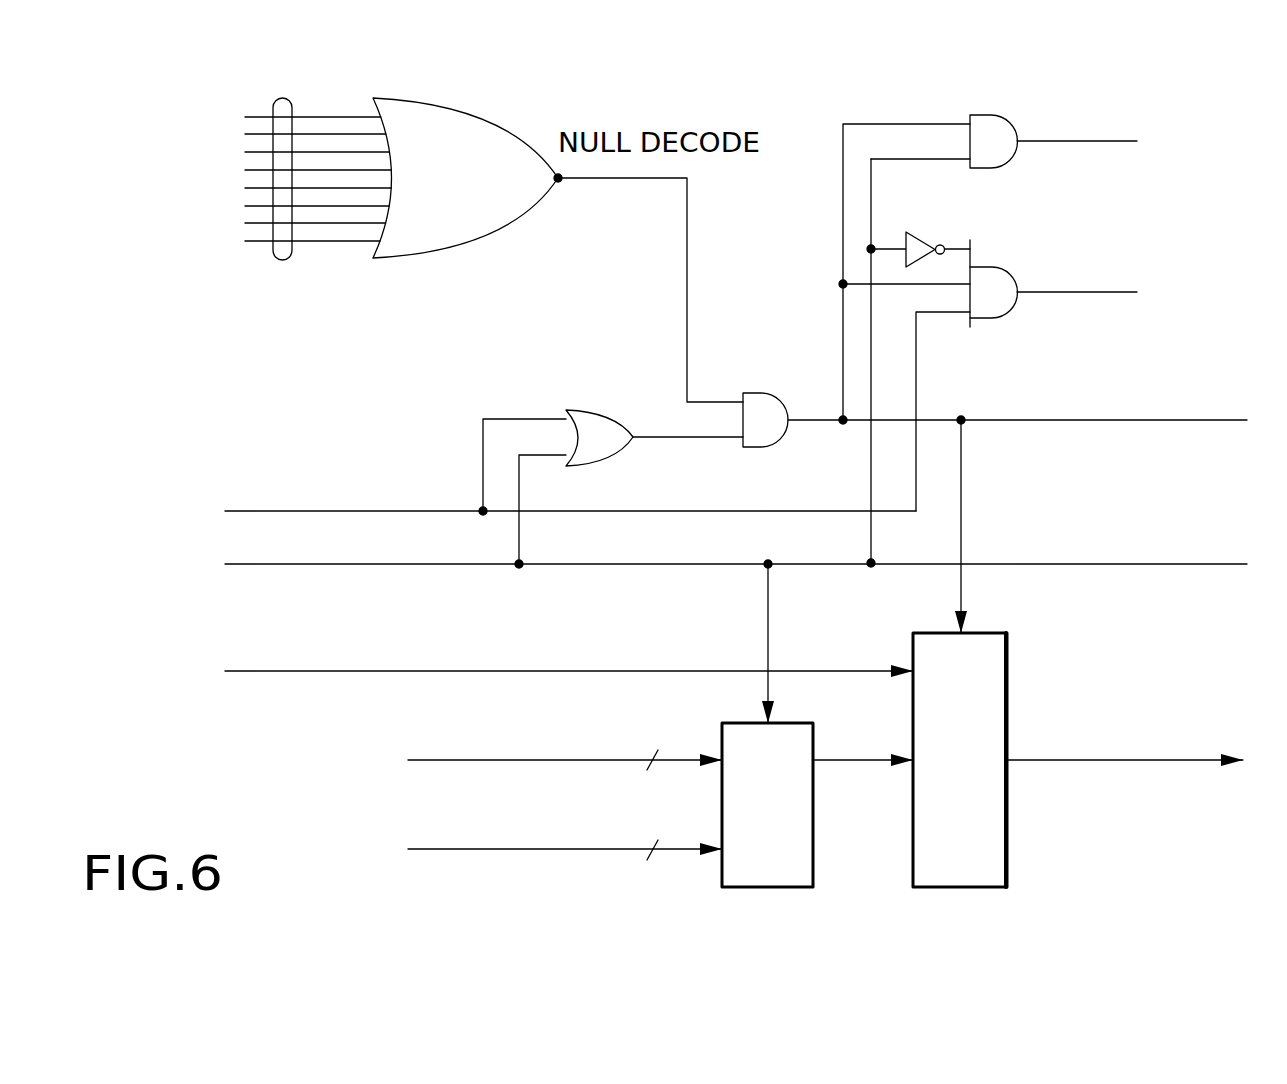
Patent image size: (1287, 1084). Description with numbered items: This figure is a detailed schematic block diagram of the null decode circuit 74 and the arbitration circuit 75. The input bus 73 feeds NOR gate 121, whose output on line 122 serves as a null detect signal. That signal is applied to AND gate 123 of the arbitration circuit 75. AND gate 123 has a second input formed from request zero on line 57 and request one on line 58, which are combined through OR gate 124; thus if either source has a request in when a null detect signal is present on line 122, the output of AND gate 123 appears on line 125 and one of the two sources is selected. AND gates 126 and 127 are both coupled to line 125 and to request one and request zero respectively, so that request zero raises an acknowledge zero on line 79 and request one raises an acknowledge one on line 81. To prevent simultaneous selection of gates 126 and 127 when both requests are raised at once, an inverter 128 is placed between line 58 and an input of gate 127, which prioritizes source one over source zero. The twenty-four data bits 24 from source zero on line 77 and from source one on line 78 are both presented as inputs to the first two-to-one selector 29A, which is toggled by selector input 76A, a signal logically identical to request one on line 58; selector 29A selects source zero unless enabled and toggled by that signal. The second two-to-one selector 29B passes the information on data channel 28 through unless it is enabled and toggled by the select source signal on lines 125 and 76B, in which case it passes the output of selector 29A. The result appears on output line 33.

The input bus 73 is at (282, 259).
The null decode circuit 74 is at (484, 186).
The NOR gate 121 is at (492, 223).
The null detect signal line 122 is at (687, 238).
The arbitration circuit 75 is at (778, 276).
The AND gate 123 is at (765, 402).
The OR gate 124 is at (590, 418).
The select source line 125 is at (920, 125).
The AND gate 126 is at (1005, 125).
The AND gate 127 is at (1003, 270).
The inverter 128 is at (923, 230).
The acknowledge 1 line 81 is at (1070, 141).
The acknowledge 0 line 79 is at (1097, 292).
The request 0 line 57 is at (367, 510).
The request 1 line 58 is at (350, 564).
The data channel 28 is at (465, 670).
The selector input 76A is at (767, 603).
The select source line 76B is at (962, 500).
The data bits 24 is at (656, 790).
The source 0 line 77 is at (487, 760).
The source 1 line 78 is at (472, 849).
The first 2 to 1 selector 29A is at (778, 887).
The second 2 to 1 selector 29B is at (1002, 698).
The output line 33 is at (1180, 760).